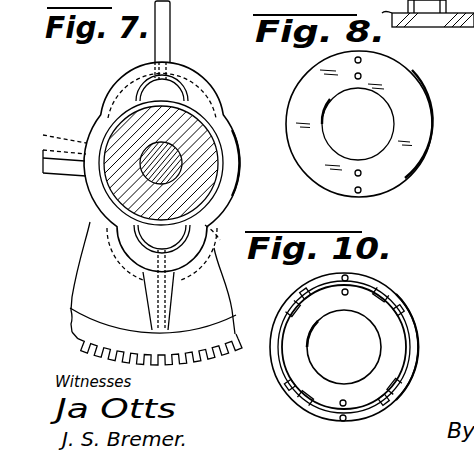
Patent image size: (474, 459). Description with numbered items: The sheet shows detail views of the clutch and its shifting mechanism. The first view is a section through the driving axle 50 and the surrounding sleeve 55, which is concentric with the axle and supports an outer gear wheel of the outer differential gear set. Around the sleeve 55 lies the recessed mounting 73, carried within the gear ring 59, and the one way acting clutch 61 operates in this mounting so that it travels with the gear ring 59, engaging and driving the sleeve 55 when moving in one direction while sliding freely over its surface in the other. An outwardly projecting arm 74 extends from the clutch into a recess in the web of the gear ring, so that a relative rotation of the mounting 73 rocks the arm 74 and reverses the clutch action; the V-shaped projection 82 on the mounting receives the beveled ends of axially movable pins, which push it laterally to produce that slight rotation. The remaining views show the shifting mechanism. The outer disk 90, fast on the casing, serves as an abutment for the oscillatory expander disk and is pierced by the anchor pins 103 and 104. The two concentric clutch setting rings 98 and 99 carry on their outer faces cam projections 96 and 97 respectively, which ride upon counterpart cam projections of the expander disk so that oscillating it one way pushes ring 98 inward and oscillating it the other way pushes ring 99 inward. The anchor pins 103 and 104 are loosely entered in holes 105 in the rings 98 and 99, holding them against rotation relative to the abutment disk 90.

In FIG. 7, the driving axle 50 is at (176, 170).
In FIG. 7, the sleeve 55 is at (195, 128).
In FIG. 7, the gear ring 59 is at (90, 326).
In FIG. 7, the one way acting clutch 61 is at (162, 164).
In FIG. 7, the recessed mounting 73 is at (232, 152).
In FIG. 7, the outwardly projecting arm 74 is at (171, 15).
In FIG. 7, the V-shaped projection 82 is at (76, 172).
In FIG. 8, the outer disk 90 is at (359, 124).
In FIG. 10, the cam projection 96 is at (294, 312).
In FIG. 10, the cam projection 97 is at (300, 290).
In FIG. 10, the clutch setting ring 98 is at (354, 347).
In FIG. 10, the clutch setting ring 99 is at (410, 363).
In FIG. 8, the anchor pin 103 is at (361, 77).
In FIG. 8, the anchor pin 104 is at (361, 60).
In FIG. 10, the hole 105 is at (348, 278).